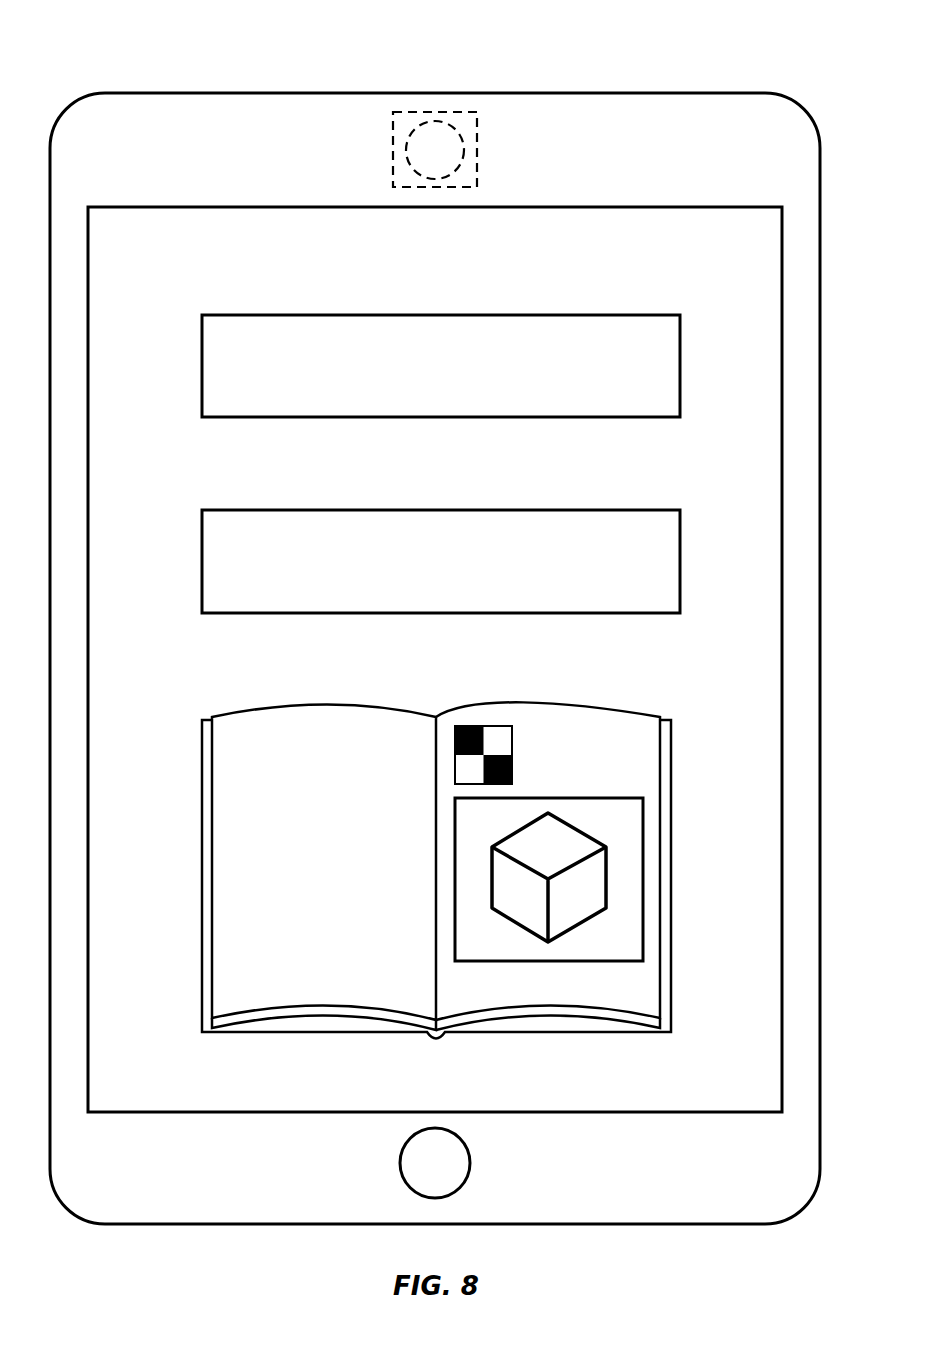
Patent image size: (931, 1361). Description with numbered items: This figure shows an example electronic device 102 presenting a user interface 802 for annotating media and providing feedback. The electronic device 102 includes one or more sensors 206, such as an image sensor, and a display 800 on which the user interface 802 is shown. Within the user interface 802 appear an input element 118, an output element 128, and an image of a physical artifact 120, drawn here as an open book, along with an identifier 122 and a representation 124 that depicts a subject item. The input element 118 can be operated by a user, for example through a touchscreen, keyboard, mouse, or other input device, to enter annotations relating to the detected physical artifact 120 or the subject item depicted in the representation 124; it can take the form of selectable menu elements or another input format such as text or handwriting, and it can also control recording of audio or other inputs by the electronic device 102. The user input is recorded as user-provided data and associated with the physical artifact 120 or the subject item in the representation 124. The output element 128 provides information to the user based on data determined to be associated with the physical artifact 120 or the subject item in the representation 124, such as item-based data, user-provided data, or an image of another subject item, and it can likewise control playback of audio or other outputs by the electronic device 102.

The electronic device 102 is at (183, 93).
The sensors 206 is at (430, 112).
The display 800 is at (165, 207).
The user interface 802 is at (125, 300).
The input element 118 is at (538, 315).
The output element 128 is at (538, 510).
The physical artifact 120 is at (253, 710).
The identifier 122 is at (483, 726).
The representation 124 is at (568, 822).